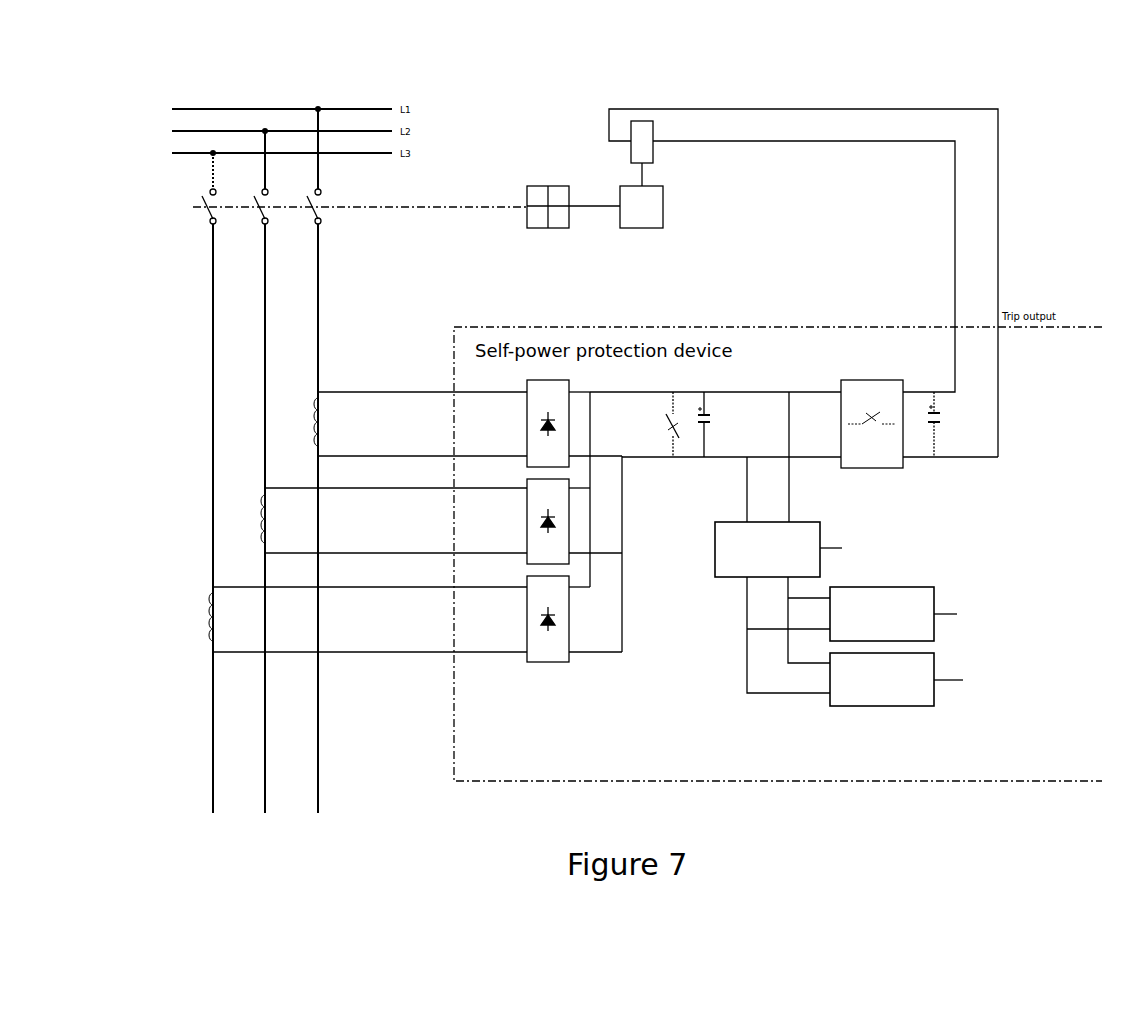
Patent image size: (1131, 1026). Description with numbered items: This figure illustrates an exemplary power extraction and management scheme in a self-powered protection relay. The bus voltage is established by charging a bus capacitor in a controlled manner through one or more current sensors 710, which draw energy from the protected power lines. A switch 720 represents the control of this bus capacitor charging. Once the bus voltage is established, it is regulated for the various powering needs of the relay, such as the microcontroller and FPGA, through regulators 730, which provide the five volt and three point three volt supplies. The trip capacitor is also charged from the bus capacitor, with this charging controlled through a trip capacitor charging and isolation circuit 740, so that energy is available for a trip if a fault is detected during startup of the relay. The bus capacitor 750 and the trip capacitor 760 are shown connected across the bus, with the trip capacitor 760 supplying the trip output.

The current sensors 710 is at (363, 382).
The switch 720 is at (683, 403).
The regulators 730 is at (830, 510).
The trip capacitor charging and isolation circuit 740 is at (930, 373).
The bus capacitor 750 is at (697, 437).
The trip capacitor 760 is at (963, 407).